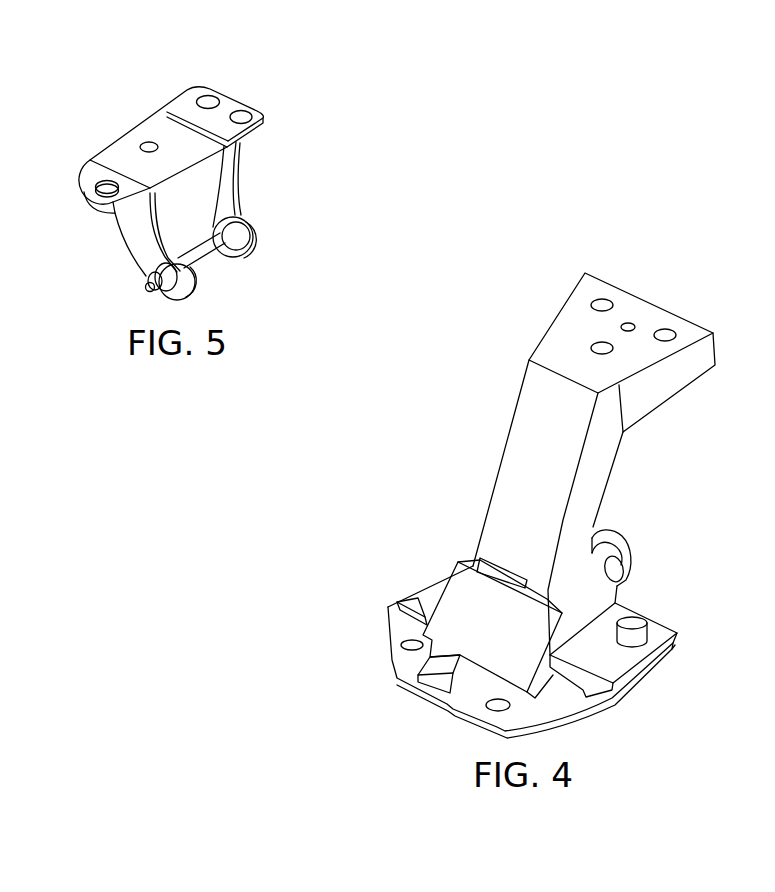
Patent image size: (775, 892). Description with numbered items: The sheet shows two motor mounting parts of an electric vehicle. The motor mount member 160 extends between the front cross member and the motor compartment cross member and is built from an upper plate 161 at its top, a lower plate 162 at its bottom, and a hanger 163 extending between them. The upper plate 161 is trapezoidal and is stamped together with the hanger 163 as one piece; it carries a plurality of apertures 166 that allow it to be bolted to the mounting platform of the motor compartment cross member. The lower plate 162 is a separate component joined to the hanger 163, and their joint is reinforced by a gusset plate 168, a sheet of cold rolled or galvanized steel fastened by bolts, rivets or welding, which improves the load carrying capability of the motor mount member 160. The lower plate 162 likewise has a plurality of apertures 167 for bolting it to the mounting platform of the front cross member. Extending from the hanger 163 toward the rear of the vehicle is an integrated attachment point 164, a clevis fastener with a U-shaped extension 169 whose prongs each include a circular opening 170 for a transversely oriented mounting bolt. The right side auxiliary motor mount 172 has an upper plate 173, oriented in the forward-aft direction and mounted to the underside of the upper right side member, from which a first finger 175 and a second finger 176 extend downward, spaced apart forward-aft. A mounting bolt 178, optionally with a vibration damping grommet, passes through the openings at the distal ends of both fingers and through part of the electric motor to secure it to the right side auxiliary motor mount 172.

In FIG. 4, the motor mount member 160 is at (486, 412).
In FIG. 4, the upper plate 161 is at (557, 330).
In FIG. 4, the lower plate 162 is at (388, 615).
In FIG. 4, the hanger 163 is at (507, 478).
In FIG. 4, the attachment point 164 is at (634, 526).
In FIG. 4, the apertures 166 is at (601, 303).
In FIG. 4, the apertures 167 is at (400, 646).
In FIG. 4, the gusset plate 168 is at (453, 588).
In FIG. 4, the U-shaped extension 169 is at (632, 558).
In FIG. 4, the circular opening 170 is at (617, 570).
In FIG. 5, the right side auxiliary motor mount 172 is at (124, 119).
In FIG. 5, the upper plate 173 is at (257, 132).
In FIG. 5, the first finger 175 is at (133, 253).
In FIG. 5, the second finger 176 is at (237, 190).
In FIG. 5, the mounting bolt 178 is at (207, 267).